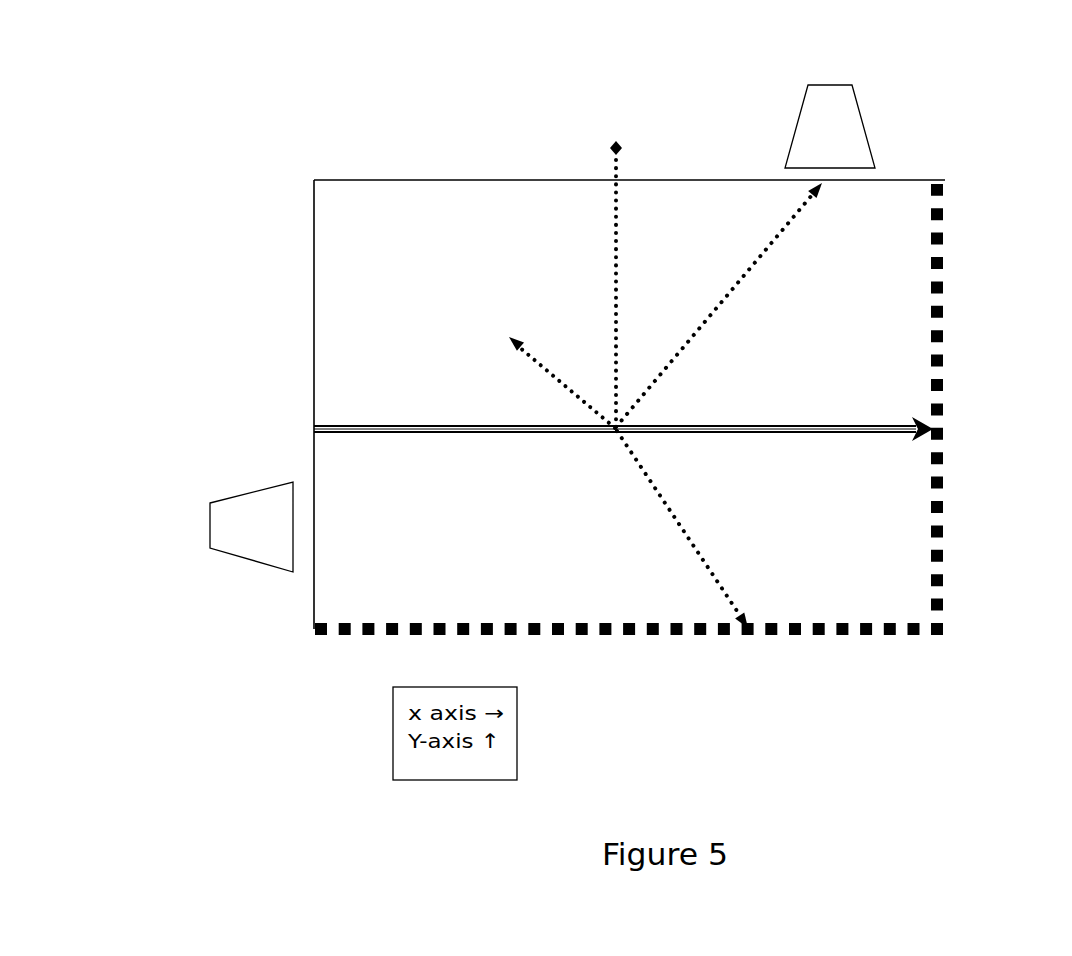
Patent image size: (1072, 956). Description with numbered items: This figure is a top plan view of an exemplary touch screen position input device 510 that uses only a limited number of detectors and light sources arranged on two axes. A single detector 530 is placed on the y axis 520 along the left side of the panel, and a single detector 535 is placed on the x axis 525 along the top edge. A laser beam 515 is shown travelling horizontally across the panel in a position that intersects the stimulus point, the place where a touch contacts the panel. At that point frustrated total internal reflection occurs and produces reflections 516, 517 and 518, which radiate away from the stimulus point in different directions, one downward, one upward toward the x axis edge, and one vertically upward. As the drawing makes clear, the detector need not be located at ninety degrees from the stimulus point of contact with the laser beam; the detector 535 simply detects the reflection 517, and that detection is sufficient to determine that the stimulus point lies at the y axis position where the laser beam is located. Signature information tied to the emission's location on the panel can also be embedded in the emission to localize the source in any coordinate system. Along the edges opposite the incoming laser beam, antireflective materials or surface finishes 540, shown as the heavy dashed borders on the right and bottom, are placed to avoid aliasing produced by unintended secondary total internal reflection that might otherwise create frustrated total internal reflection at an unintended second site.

The display screen 510 is at (639, 412).
The laser beam 515 is at (386, 423).
The reflection 516 is at (668, 512).
The reflection 517 is at (747, 272).
The reflection 518 is at (617, 218).
The y axis 520 is at (313, 277).
The x axis 525 is at (480, 180).
The detector 530 is at (237, 563).
The detector 535 is at (832, 80).
The antireflective materials or surface finishes 540 is at (943, 530).